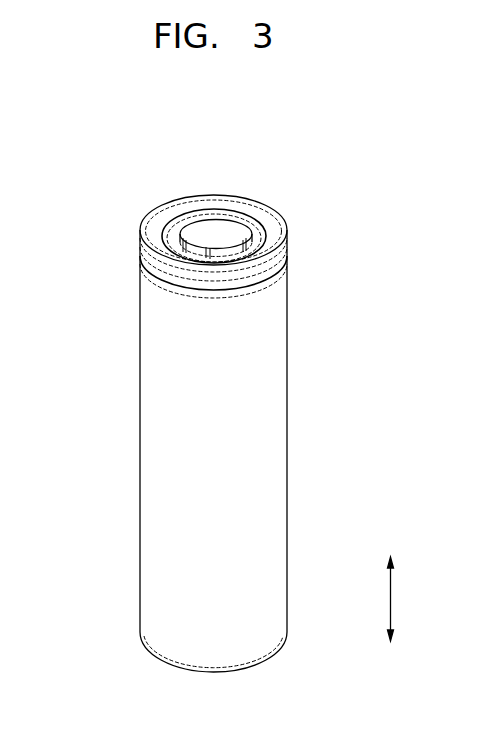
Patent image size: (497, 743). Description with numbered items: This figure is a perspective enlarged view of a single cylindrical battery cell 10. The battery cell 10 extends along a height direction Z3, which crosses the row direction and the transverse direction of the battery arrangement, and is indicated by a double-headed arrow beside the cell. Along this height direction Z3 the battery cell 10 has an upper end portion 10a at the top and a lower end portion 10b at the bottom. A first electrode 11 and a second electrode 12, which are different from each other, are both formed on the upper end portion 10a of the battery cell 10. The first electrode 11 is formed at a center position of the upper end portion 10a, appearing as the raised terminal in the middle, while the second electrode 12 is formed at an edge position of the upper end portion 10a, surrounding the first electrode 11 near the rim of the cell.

The battery cell 10 is at (353, 178).
The upper end portion 10a is at (126, 250).
The lower end portion 10b is at (126, 606).
The first electrode 11 is at (214, 231).
The second electrode 12 is at (262, 233).
The height direction Z3 is at (392, 585).